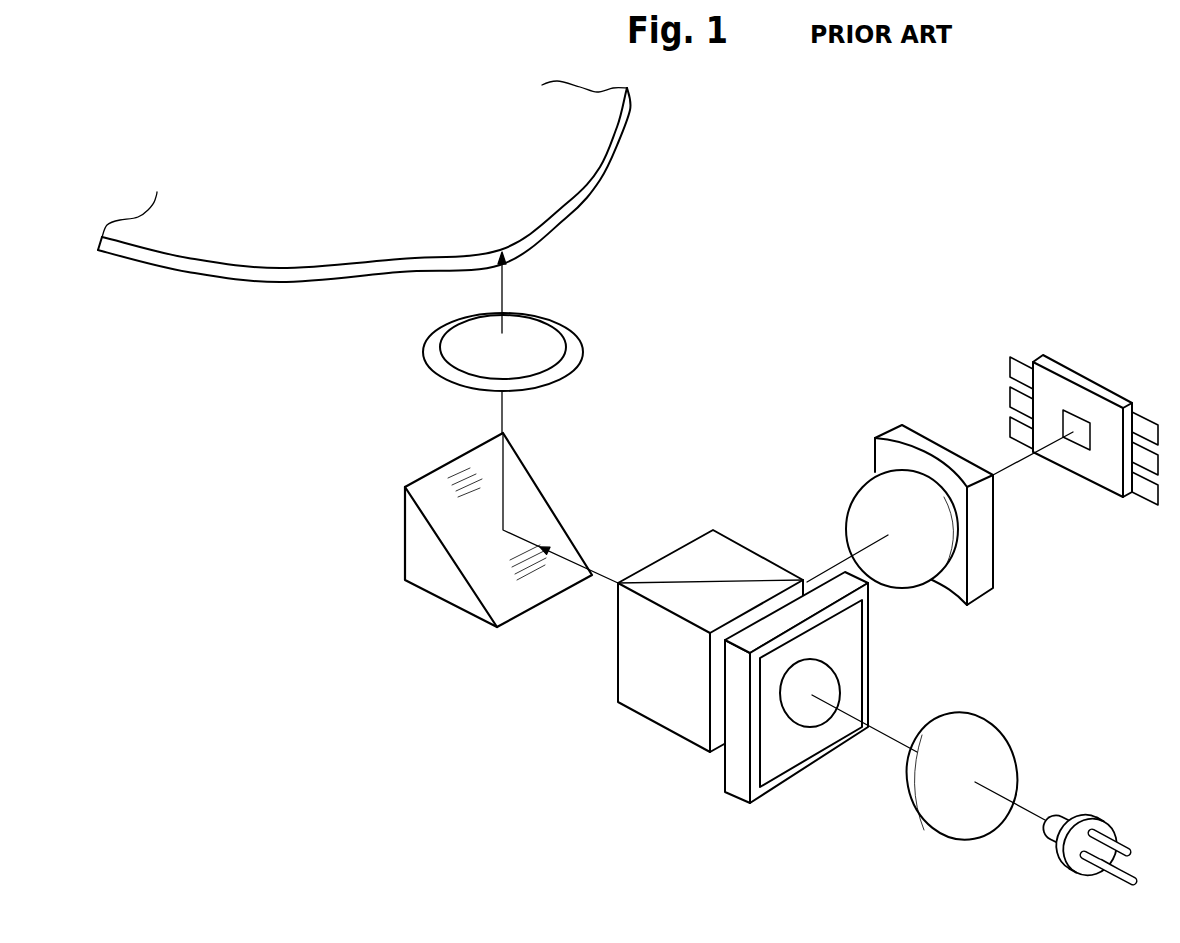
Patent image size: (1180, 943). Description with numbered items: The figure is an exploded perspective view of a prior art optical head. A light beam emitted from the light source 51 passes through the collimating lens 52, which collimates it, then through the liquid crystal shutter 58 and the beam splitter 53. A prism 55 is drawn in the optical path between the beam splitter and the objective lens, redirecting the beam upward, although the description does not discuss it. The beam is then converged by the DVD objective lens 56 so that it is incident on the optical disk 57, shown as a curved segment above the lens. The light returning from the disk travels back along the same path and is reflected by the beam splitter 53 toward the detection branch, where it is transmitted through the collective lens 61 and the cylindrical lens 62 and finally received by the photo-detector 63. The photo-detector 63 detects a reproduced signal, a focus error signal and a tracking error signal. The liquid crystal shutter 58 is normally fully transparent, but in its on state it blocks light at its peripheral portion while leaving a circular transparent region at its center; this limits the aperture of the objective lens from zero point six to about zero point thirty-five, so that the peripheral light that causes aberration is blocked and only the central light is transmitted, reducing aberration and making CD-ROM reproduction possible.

The light source 51 is at (1067, 820).
The collimating lens 52 is at (935, 825).
The beam splitter 53 is at (658, 703).
The reflecting prism 55 is at (433, 577).
The DVD objective lens 56 is at (430, 360).
The optical disk 57 is at (607, 165).
The liquid crystal shutter 58 is at (737, 773).
The collective lens 61 is at (915, 578).
The cylindrical lens 62 is at (908, 433).
The photo-detector 63 is at (1052, 363).